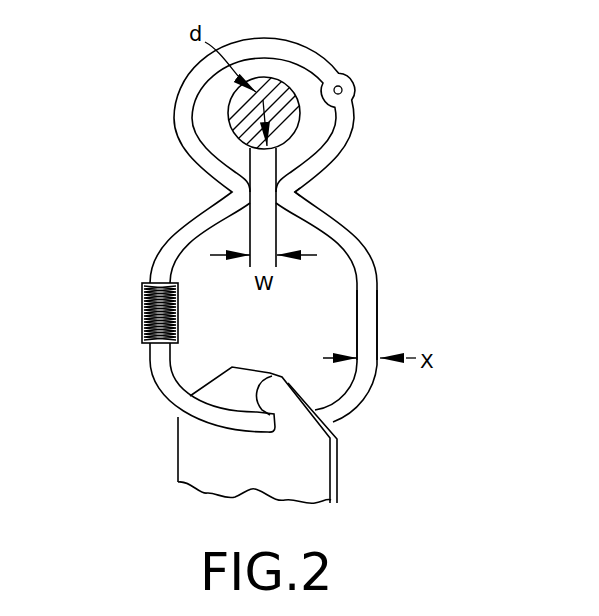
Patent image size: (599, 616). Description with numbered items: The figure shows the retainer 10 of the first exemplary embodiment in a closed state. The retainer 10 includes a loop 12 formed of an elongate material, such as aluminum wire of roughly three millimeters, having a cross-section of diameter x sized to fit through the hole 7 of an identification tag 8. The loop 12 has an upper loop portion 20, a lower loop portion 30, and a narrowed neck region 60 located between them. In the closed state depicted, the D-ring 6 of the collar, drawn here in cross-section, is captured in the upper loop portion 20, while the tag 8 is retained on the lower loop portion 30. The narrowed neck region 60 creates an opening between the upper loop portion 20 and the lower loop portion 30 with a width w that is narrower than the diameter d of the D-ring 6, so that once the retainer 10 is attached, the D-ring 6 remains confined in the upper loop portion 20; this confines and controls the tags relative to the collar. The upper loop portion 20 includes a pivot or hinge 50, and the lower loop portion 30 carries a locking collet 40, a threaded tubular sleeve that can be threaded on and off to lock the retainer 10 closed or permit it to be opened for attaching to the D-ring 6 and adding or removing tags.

The D-ring 6 is at (227, 102).
The hole 7 is at (270, 373).
The identification tag 8 is at (322, 478).
The retainer 10 is at (410, 127).
The loop 12 is at (363, 240).
The upper loop portion 20 is at (190, 165).
The lower loop portion 30 is at (383, 325).
The locking collet 40 is at (140, 315).
The pivot or hinge 50 is at (353, 82).
The narrowed neck region 60 is at (302, 194).